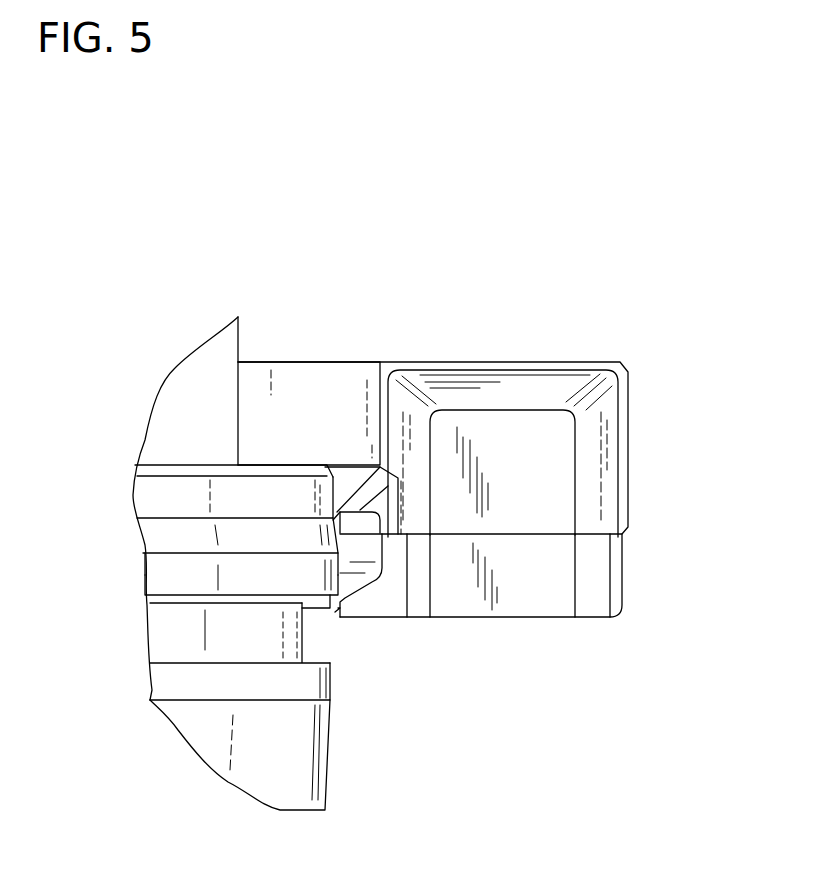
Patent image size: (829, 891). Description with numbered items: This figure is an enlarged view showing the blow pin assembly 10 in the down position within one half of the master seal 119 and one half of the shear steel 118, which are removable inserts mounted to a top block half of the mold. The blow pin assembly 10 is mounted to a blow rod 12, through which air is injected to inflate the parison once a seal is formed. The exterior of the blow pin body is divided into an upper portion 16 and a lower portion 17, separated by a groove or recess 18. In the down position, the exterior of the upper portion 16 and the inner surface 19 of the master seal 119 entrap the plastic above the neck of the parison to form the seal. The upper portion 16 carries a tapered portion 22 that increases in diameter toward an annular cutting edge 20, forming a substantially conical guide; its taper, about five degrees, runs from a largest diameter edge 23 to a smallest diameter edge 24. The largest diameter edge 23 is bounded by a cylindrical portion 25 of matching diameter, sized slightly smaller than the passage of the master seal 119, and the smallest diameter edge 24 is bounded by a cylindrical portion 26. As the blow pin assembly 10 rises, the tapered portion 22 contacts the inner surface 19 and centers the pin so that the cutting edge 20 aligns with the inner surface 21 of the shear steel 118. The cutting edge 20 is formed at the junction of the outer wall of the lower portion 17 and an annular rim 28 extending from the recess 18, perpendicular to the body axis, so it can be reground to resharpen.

The blow pin assembly 10 is at (328, 783).
The blow rod 12 is at (204, 385).
The upper portion 16 is at (145, 492).
The lower portion 17 is at (165, 680).
The recess 18 is at (165, 642).
The inner surface 19 is at (352, 507).
The annular cutting edge 20 is at (335, 657).
The inner surface 21 is at (315, 612).
The tapered portion 22 is at (267, 535).
The largest diameter edge 23 is at (143, 562).
The smallest diameter edge 24 is at (143, 522).
The cylindrical portion 25 is at (152, 582).
The cylindrical portion 26 is at (163, 482).
The annular rim 28 is at (310, 652).
The shear steel 118 is at (557, 590).
The master seal 119 is at (540, 430).